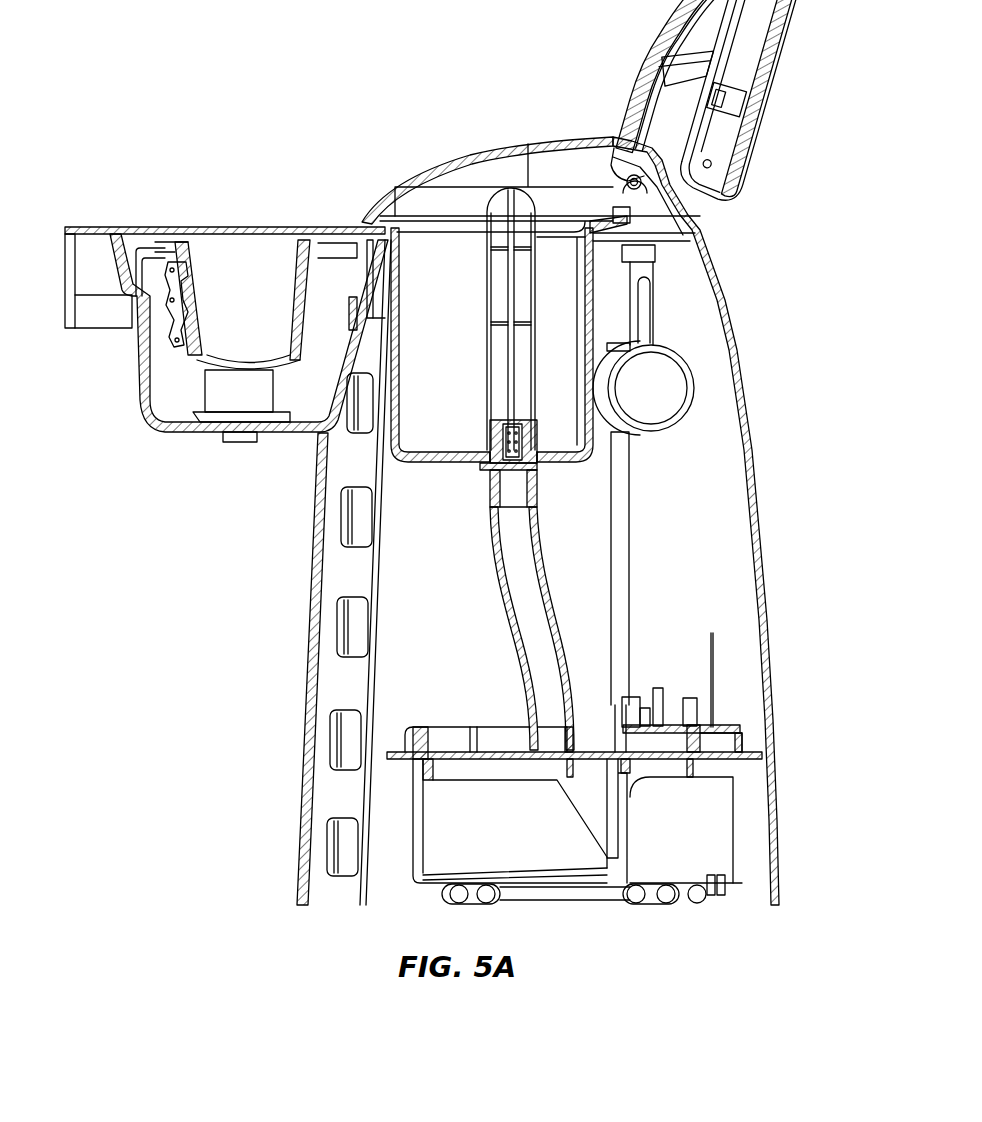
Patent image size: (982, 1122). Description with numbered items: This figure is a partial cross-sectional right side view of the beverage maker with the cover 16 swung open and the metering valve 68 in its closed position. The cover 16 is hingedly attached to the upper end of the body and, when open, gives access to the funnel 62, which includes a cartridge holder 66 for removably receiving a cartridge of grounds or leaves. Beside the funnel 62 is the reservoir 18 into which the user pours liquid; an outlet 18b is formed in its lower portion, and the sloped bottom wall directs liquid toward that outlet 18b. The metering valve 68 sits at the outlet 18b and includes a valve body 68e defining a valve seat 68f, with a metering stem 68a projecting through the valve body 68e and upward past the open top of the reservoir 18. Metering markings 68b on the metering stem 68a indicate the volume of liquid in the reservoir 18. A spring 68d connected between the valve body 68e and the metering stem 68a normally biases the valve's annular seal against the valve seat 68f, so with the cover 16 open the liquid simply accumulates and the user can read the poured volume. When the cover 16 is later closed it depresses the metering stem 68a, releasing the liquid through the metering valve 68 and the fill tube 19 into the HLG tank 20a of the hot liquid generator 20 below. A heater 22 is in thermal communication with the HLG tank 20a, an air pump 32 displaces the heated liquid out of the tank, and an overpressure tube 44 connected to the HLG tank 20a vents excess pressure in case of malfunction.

The cover 16 is at (768, 78).
The reservoir 18 is at (592, 300).
The outlet 18b is at (490, 468).
The fill tube 19 is at (502, 610).
The hot liquid generator (HLG) 20 is at (390, 797).
The HLG tank 20a is at (440, 817).
The heater 22 is at (440, 895).
The air pump 32 is at (697, 388).
The overpressure tube 44 is at (629, 548).
The funnel 62 is at (140, 382).
The cartridge holder 66 is at (193, 310).
The metering valve 68 is at (483, 490).
The metering stem 68a is at (497, 357).
The metering markings 68b is at (488, 248).
The spring 68d is at (507, 437).
The valve body 68e is at (527, 443).
The valve seat 68f is at (490, 467).